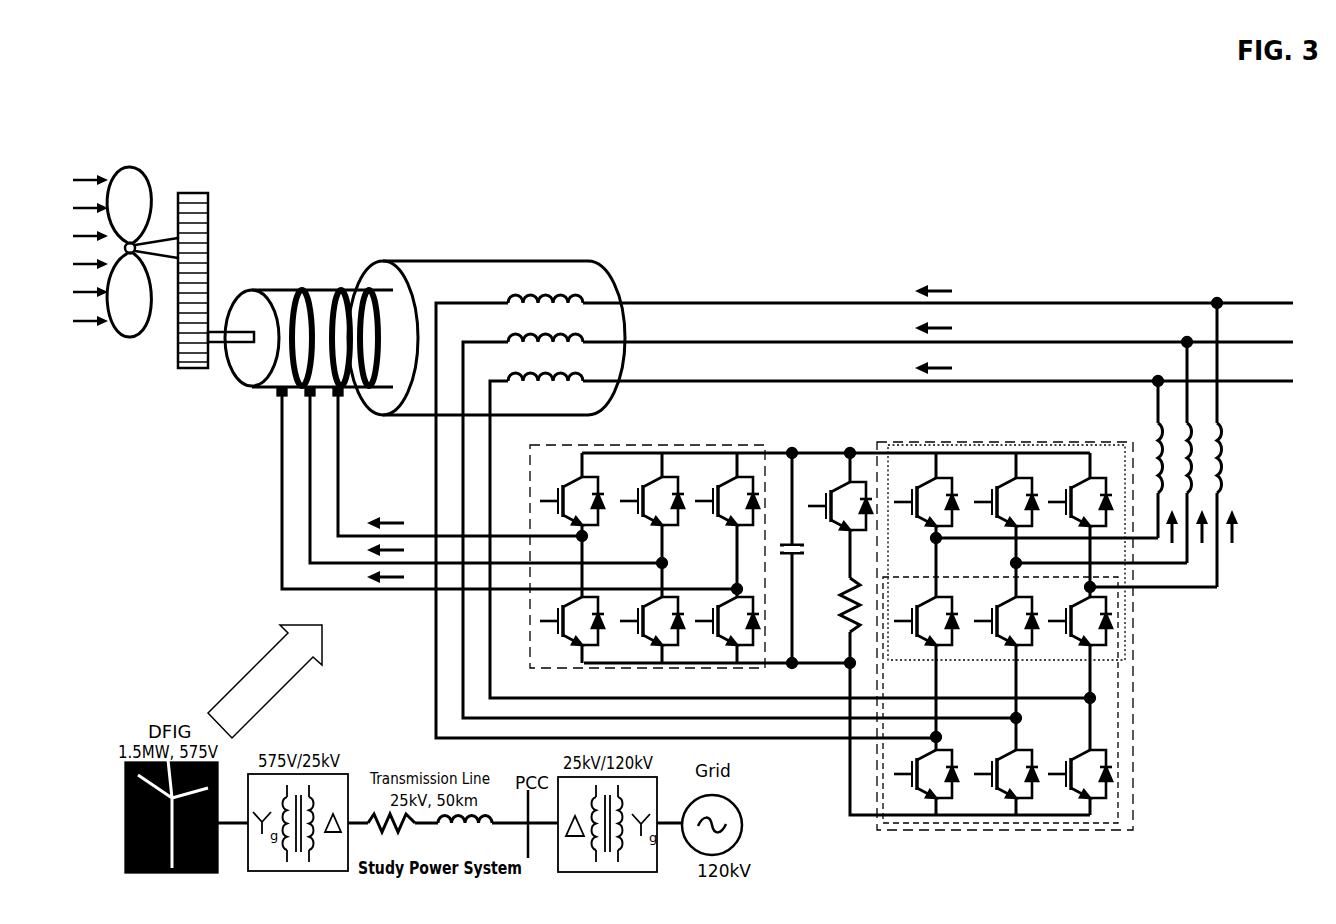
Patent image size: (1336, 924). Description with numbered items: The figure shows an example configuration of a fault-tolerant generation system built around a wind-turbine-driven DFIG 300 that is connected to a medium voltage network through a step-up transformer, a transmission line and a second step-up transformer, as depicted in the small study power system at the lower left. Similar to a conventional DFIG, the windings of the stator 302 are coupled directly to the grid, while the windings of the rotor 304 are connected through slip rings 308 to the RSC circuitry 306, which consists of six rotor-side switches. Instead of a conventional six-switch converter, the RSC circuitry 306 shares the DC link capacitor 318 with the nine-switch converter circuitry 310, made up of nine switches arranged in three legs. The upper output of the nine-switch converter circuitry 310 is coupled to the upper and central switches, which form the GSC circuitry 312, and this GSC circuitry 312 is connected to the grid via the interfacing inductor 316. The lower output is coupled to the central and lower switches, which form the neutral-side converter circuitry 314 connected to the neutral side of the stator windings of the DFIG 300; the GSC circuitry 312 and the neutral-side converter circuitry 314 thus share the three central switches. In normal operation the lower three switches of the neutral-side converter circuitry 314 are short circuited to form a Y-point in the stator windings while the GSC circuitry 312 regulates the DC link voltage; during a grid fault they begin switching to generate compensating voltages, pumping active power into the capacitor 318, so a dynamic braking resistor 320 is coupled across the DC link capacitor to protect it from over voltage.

The DFIG 300 is at (107, 144).
The stator 302 is at (357, 266).
The rotor 304 is at (252, 388).
The RSC circuitry 306 is at (530, 476).
The slip rings 308 is at (366, 306).
The nine-switch converter circuitry 310 is at (1137, 680).
The GSC circuitry 312 is at (1145, 585).
The neutral-side converter (NSC) circuitry 314 is at (1117, 797).
The interfacing inductor (L) 316 is at (1232, 445).
The DC link capacitor (C) 318 is at (780, 652).
The dynamic braking resistor (DBR) 320 is at (842, 647).